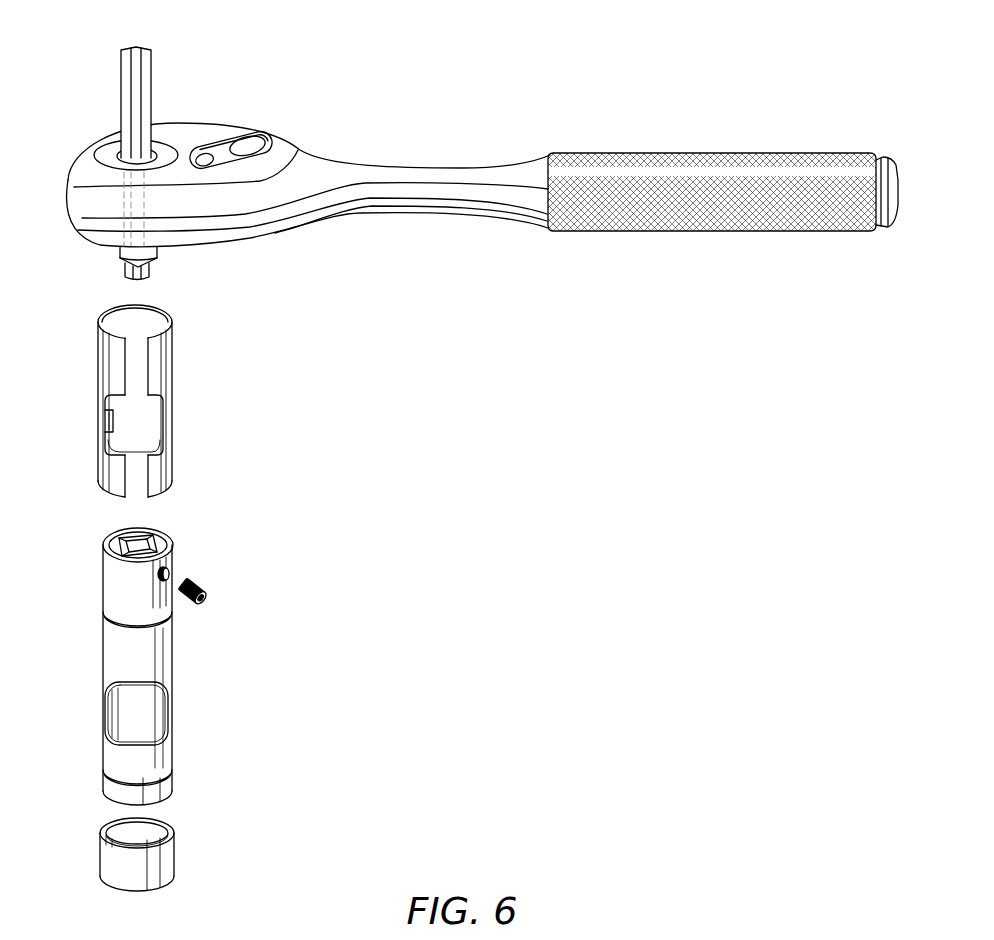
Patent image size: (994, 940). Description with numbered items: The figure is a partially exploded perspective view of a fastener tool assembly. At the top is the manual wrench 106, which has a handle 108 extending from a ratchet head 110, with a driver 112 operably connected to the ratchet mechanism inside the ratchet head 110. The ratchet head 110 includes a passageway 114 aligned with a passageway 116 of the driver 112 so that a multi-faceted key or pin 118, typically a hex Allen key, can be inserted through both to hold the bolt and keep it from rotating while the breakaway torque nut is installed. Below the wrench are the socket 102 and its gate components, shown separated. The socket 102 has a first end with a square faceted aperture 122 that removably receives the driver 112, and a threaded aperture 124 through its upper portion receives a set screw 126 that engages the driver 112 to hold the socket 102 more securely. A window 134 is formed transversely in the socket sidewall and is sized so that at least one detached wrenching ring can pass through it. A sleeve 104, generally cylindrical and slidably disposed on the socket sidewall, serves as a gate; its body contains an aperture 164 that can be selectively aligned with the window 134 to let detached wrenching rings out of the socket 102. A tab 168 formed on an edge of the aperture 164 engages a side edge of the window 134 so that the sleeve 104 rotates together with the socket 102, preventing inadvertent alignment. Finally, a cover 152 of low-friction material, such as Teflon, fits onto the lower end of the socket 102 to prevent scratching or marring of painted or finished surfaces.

The socket 102 is at (186, 652).
The sleeve 104 is at (177, 371).
The manual wrench 106 is at (360, 128).
The handle 108 is at (350, 192).
The ratchet head 110 is at (83, 189).
The driver 112 is at (120, 258).
The passageway 114 is at (118, 157).
The passageway 116 is at (150, 261).
The pin 118 is at (140, 102).
The faceted aperture 122 is at (118, 547).
The threaded aperture 124 is at (168, 570).
The set screw 126 is at (204, 590).
The window 134 is at (158, 722).
The cover 152 is at (175, 860).
The aperture 164 is at (150, 430).
The tab 168 is at (105, 414).